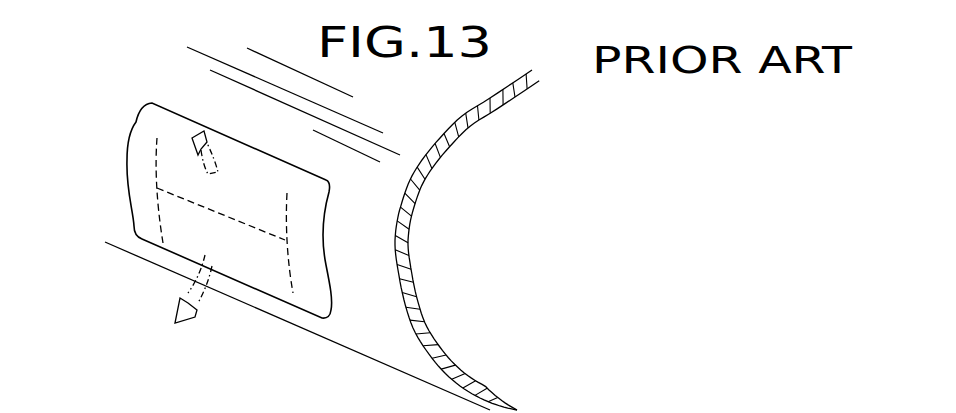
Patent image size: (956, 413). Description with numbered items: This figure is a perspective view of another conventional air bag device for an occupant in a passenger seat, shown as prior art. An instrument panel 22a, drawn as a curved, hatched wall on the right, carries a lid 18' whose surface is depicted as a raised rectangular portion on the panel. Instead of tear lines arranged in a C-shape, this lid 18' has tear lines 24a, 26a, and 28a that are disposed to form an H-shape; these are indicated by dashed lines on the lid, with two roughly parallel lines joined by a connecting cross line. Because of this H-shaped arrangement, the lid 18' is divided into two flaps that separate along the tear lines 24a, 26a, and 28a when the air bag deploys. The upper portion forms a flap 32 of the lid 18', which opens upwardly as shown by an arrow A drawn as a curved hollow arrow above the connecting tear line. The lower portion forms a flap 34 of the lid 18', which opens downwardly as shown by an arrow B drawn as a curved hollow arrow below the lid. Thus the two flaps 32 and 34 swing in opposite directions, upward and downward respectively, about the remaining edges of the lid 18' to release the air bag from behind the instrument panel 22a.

The lid 18' is at (210, 141).
The instrument panel 22a is at (431, 94).
The tear line 24a is at (158, 157).
The tear line 26a is at (288, 222).
The tear line 28a is at (200, 263).
The flap 32 is at (176, 158).
The flap 34 is at (181, 229).
The arrow A is at (207, 152).
The arrow B is at (197, 296).